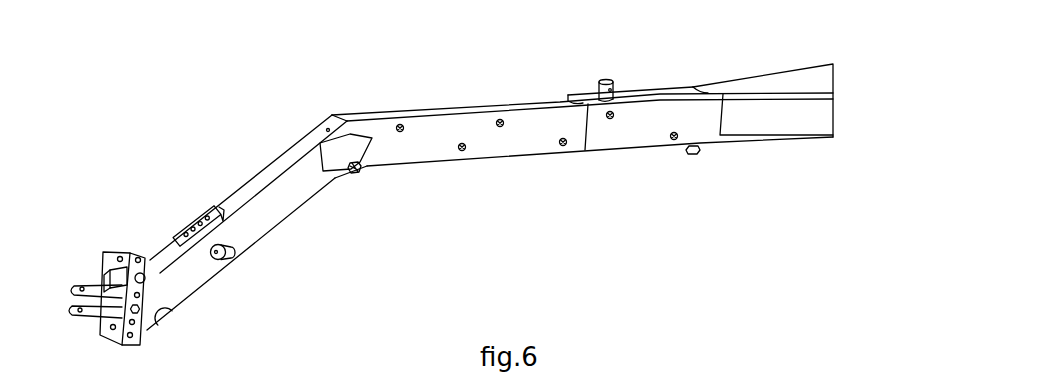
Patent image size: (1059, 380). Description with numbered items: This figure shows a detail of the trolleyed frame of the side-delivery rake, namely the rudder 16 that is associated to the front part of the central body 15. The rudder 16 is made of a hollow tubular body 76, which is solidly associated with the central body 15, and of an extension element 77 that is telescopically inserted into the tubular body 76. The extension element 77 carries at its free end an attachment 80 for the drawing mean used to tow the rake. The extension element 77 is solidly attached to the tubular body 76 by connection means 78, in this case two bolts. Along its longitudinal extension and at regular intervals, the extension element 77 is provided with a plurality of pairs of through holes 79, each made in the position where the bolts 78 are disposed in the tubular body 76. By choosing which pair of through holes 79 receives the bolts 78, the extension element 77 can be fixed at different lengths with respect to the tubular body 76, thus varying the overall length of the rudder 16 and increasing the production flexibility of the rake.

The central body 15 is at (797, 85).
The rudder 16 is at (384, 90).
The hollow tubular body 76 is at (646, 92).
The extension element 77 is at (448, 136).
The connection means 78 is at (614, 118).
The through holes 79 is at (402, 131).
The attachment 80 is at (110, 257).